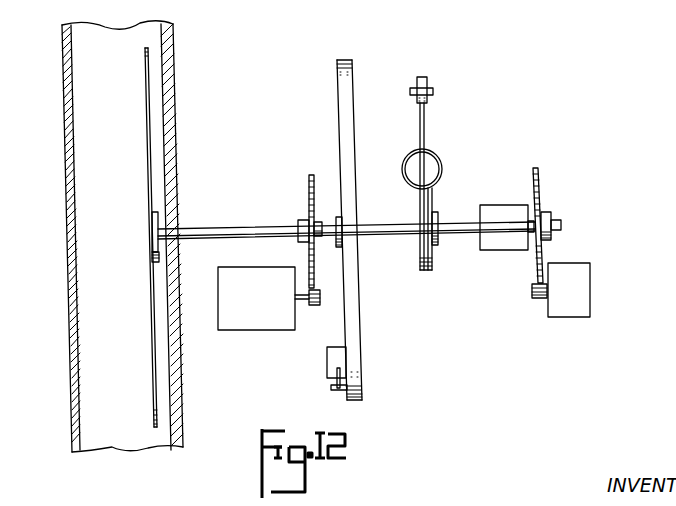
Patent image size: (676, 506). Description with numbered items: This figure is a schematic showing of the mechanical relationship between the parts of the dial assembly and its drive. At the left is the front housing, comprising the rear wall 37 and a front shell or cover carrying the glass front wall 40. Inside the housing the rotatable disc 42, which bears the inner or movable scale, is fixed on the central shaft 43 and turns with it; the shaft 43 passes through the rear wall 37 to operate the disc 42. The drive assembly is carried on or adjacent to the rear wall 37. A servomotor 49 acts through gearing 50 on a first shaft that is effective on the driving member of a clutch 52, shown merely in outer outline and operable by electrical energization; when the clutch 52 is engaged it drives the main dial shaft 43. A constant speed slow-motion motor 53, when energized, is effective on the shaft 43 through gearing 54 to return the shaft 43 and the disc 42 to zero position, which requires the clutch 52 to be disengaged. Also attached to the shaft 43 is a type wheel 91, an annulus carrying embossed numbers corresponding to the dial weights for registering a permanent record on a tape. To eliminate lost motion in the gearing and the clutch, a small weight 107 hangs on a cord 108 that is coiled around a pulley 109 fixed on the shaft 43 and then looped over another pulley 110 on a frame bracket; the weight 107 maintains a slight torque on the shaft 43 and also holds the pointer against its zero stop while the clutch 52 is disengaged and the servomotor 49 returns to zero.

The rear wall 37 is at (173, 135).
The glass front wall 40 is at (65, 178).
The rotatable disc 42 is at (147, 180).
The central shaft 43 is at (208, 232).
The servomotor 49 is at (583, 304).
The gearing 50 is at (540, 192).
The clutch 52 is at (510, 183).
The constant speed slow-motion motor 53 is at (255, 331).
The gearing 54 is at (310, 190).
The type wheel 91 is at (352, 140).
The weight 107 is at (440, 156).
The cord 108 is at (424, 122).
The pulley 109 is at (420, 214).
The pulley 110 is at (427, 84).